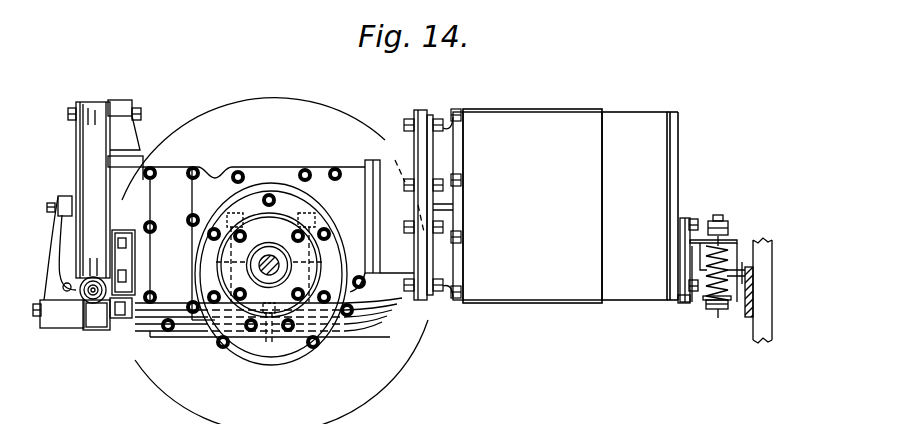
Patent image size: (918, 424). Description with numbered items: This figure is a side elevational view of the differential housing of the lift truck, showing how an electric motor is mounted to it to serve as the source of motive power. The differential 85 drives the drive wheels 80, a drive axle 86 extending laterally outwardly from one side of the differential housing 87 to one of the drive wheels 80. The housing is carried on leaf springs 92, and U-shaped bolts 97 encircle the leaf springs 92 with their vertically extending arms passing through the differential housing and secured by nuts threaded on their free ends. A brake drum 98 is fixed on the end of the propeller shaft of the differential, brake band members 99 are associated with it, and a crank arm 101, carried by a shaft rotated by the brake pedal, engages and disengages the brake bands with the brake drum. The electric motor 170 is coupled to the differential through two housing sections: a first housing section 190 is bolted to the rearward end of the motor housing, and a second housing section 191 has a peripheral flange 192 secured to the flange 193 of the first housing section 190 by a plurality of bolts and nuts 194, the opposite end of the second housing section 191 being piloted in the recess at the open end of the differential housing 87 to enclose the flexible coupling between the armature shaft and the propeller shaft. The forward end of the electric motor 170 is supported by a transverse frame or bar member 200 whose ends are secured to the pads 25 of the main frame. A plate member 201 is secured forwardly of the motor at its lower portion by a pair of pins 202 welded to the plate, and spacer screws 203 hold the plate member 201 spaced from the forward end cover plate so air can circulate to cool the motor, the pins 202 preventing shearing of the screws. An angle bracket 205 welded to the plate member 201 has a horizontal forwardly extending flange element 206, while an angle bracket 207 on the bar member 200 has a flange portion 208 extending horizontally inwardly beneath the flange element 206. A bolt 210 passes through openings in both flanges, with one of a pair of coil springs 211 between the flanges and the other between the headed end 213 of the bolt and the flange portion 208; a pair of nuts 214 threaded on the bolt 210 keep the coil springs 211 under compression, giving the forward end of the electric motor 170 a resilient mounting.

The pads 25 is at (763, 315).
The drive wheels 80 is at (195, 123).
The differential 85 is at (262, 152).
The drive axle 86 is at (272, 260).
The differential housing 87 is at (317, 167).
The leaf springs 92 is at (383, 323).
The U-shaped bolts 97 is at (343, 223).
The brake drum 98 is at (76, 158).
The brake band members 99 is at (87, 142).
The crank arm 101 is at (62, 243).
The electric motor 170 is at (543, 113).
The first housing section 190 is at (448, 160).
The second housing section 191 is at (400, 143).
The peripheral flange 192 is at (421, 110).
The flange 193 is at (433, 116).
The bolts and nuts 194 is at (443, 225).
The frame or bar member 200 is at (755, 291).
The plate member 201 is at (685, 220).
The pins 202 is at (682, 300).
The spacer screws 203 is at (691, 223).
The angle bracket 205 is at (705, 253).
The flange element 206 is at (735, 243).
The angle bracket 207 is at (746, 282).
The flange portion 208 is at (733, 275).
The bolt 210 is at (713, 310).
The coil springs 211 is at (710, 287).
The headed end 213 is at (720, 312).
The nuts 214 is at (727, 228).